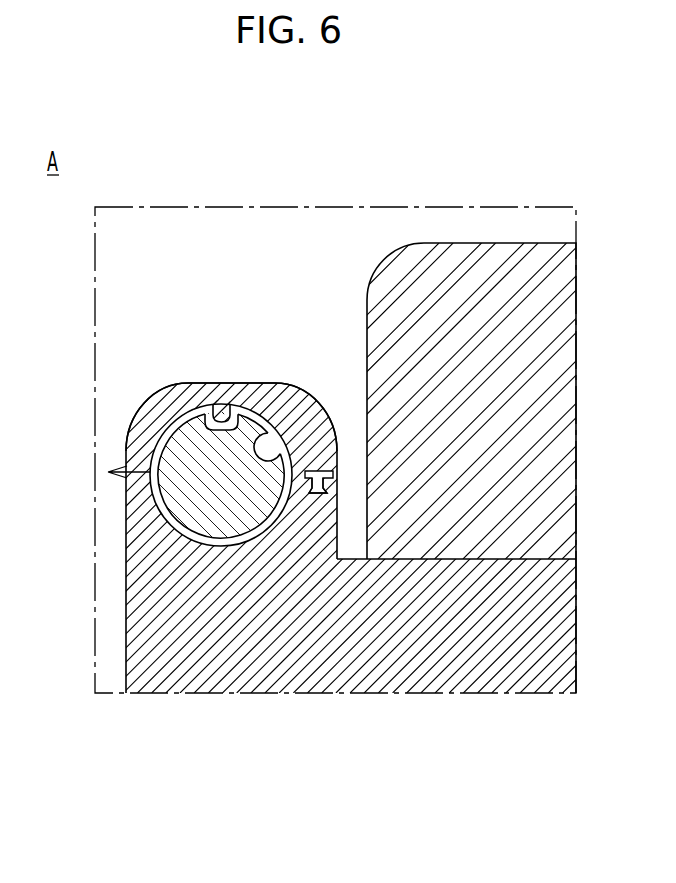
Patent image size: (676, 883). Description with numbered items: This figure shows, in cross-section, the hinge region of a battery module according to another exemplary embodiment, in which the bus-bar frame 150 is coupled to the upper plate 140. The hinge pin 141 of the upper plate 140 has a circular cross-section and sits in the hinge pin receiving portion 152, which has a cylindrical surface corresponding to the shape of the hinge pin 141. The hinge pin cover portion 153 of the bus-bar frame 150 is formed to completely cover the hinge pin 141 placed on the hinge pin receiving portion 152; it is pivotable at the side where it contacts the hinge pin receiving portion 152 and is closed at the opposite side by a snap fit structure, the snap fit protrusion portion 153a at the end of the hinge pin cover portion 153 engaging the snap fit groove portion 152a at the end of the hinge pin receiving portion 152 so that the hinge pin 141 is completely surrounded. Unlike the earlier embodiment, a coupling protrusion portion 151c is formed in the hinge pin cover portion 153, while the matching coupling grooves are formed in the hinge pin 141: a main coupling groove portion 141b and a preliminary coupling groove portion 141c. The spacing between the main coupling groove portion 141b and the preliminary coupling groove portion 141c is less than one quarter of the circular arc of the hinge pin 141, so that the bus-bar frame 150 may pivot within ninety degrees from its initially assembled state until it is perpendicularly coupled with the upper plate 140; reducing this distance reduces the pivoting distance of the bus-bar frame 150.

The upper plate 140 is at (483, 265).
The hinge pin 141 is at (177, 448).
The main coupling groove portion 141b is at (183, 413).
The preliminary coupling groove portion 141c is at (281, 432).
The bus-bar frame 150 is at (480, 650).
The coupling protrusion portion 151c is at (227, 406).
The hinge pin receiving portion 152 is at (140, 498).
The snap fit groove portion 152a is at (316, 495).
The hinge pin cover portion 153 is at (153, 413).
The snap fit protrusion portion 153a is at (321, 474).